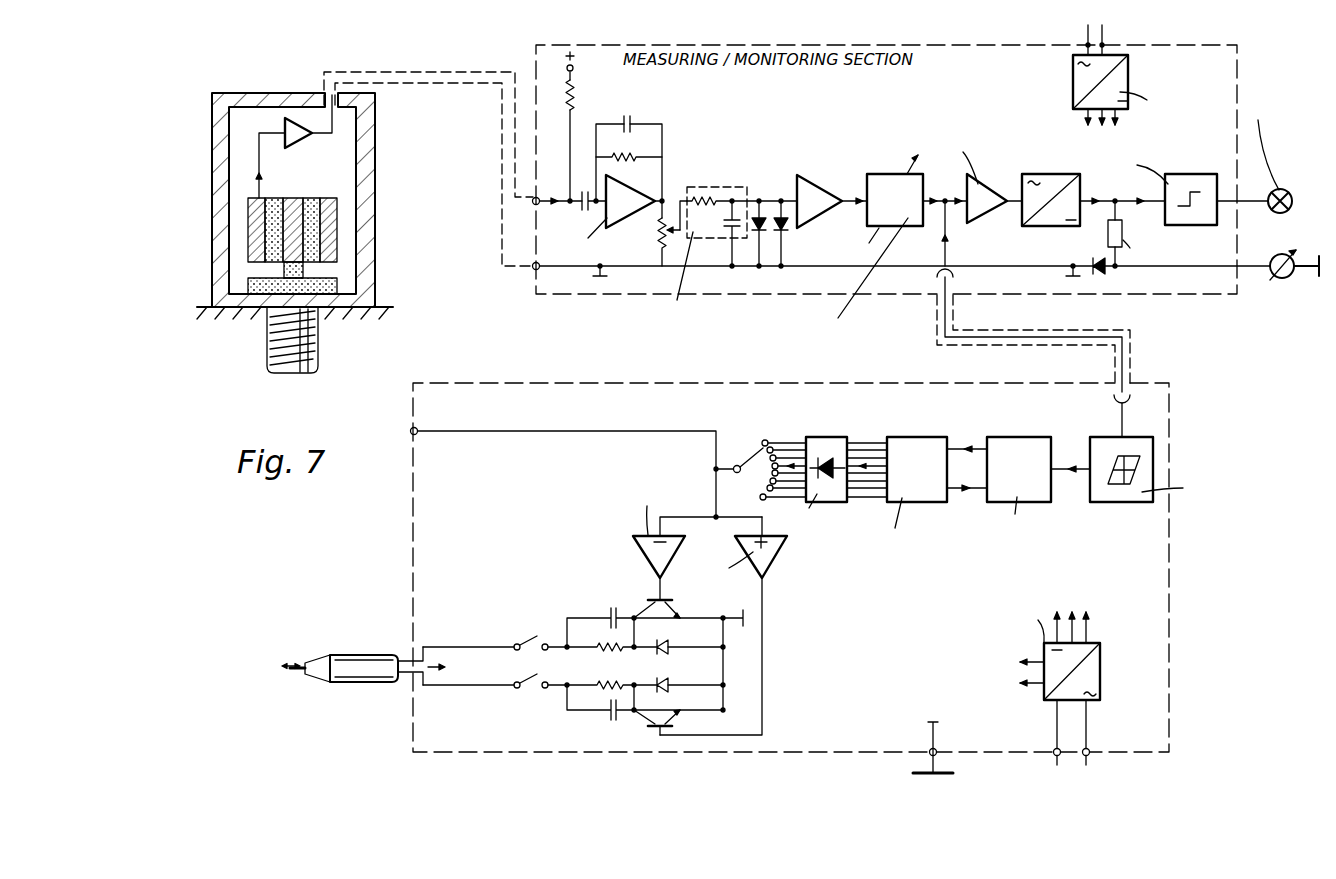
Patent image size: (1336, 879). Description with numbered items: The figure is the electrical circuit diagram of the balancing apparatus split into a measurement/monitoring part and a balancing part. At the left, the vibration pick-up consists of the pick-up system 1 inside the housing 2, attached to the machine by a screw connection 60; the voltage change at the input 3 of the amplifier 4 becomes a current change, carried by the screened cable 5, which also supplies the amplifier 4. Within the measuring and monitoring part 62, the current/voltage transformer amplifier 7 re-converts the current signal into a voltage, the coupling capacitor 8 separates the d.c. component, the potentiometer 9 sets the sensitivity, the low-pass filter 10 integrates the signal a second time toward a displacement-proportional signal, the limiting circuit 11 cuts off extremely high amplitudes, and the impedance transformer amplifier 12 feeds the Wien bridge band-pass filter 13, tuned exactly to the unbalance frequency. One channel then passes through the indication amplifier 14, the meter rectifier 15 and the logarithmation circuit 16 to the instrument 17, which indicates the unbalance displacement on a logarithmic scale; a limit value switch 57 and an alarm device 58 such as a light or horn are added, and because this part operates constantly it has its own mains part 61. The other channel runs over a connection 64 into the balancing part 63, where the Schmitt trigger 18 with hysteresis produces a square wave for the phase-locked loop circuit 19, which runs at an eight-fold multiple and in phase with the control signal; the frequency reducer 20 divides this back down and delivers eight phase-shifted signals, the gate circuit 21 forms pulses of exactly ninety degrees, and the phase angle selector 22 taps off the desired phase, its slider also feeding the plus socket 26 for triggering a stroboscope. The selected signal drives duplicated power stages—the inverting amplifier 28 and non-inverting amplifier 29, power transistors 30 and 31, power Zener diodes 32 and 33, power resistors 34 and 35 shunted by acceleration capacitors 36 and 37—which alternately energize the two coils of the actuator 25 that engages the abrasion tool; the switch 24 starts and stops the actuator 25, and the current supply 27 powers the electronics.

The pick-up system 1 is at (270, 223).
The housing 2 is at (214, 264).
The input 3 is at (272, 131).
The amplifier 4 is at (297, 122).
The screened cable 5 is at (415, 83).
The current/voltage transformer amplifier 7 is at (634, 199).
The coupling capacitor 8 is at (583, 212).
The potentiometer 9 is at (656, 229).
The low-pass filter 10 is at (705, 188).
The limiting circuit 11 is at (770, 198).
The impedance transformer amplifier 12 is at (814, 182).
The Wien bridge band-pass filter 13 is at (893, 178).
The indication amplifier 14 is at (983, 175).
The meter rectifier 15 is at (1053, 177).
The logarithmation circuit 16 is at (1095, 258).
The instrument 17 is at (1280, 283).
The Schmitt trigger 18 is at (1105, 440).
The phase-locked loop circuit 19 is at (1020, 437).
The frequency reducer 20 is at (918, 437).
The gate circuit 21 is at (827, 437).
The phase angle selector 22 is at (758, 441).
The switch 24 is at (520, 638).
The actuator 25 is at (361, 670).
The plus socket 26 is at (422, 419).
The current supply 27 is at (1092, 673).
The inverting amplifier 28 is at (636, 536).
The non-inverting amplifier 29 is at (776, 560).
The power transistor 30 is at (652, 728).
The power transistor 31 is at (646, 607).
The power Zener diode 32 is at (671, 649).
The power Zener diode 33 is at (671, 687).
The power resistor 34 is at (595, 641).
The power resistor 35 is at (598, 689).
The acceleration capacitor 36 is at (613, 611).
The acceleration capacitor 37 is at (611, 728).
The limit value switch 57 is at (1185, 183).
The alarm device 58 is at (1282, 188).
The screw connection 60 is at (276, 352).
The mains part 61 is at (1120, 77).
The measuring and monitoring part 62 is at (1238, 78).
The balancing part 63 is at (1170, 383).
The connecting line 64 is at (1136, 338).